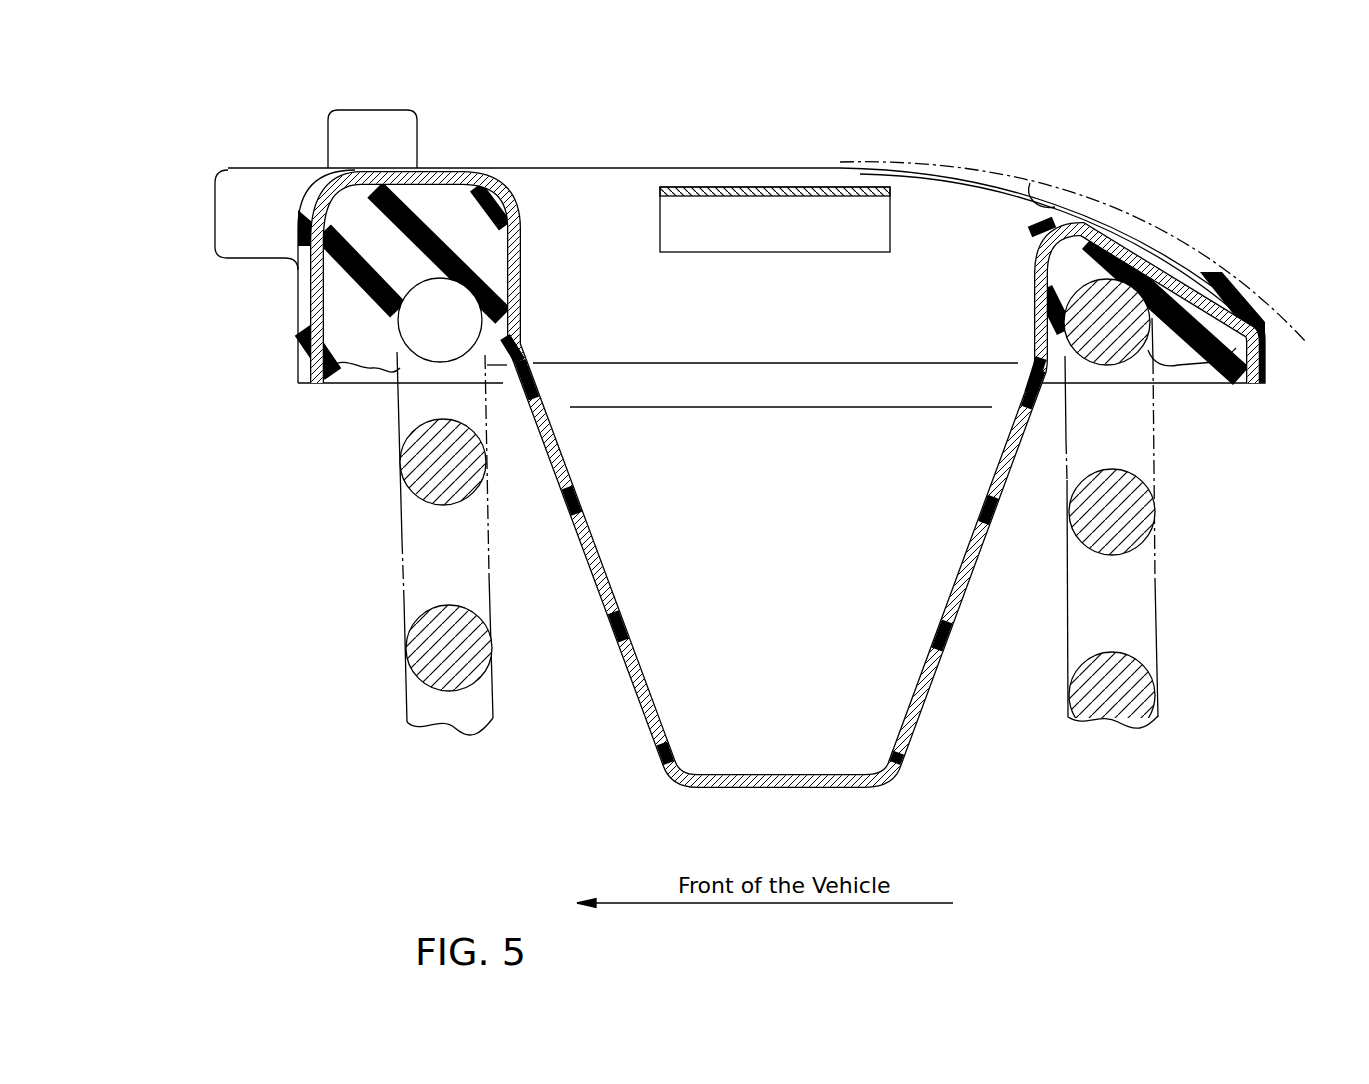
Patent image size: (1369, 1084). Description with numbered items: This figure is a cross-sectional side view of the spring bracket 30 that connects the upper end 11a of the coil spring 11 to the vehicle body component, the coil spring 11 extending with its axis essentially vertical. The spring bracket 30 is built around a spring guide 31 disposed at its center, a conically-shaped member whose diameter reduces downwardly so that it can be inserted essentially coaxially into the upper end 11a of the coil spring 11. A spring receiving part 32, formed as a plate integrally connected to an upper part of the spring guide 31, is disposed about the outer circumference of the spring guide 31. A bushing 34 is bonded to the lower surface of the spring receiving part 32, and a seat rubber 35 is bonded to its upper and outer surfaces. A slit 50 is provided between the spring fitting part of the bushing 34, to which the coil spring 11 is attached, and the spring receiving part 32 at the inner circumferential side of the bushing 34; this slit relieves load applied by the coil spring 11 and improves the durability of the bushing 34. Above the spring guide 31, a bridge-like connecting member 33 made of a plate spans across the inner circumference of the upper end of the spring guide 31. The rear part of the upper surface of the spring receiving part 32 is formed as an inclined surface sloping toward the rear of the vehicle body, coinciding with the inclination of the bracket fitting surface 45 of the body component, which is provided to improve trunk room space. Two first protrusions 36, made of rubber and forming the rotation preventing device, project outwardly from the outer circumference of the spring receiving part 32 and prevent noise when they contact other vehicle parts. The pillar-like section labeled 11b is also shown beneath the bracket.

The spring bracket 30 is at (685, 152).
The spring guide 31 is at (607, 583).
The spring receiving part 32 is at (437, 180).
The bridge-like connecting member 33 is at (760, 240).
The bushing 34 is at (342, 315).
The seat rubber 35 is at (318, 182).
The first protrusions 36 is at (230, 227).
The bracket fitting surface 45 is at (1060, 197).
The slit 50 is at (503, 335).
The coil spring 11 is at (1155, 520).
The upper end of the coil spring 11a is at (1157, 387).
The center pillar inner portion 11b is at (443, 322).